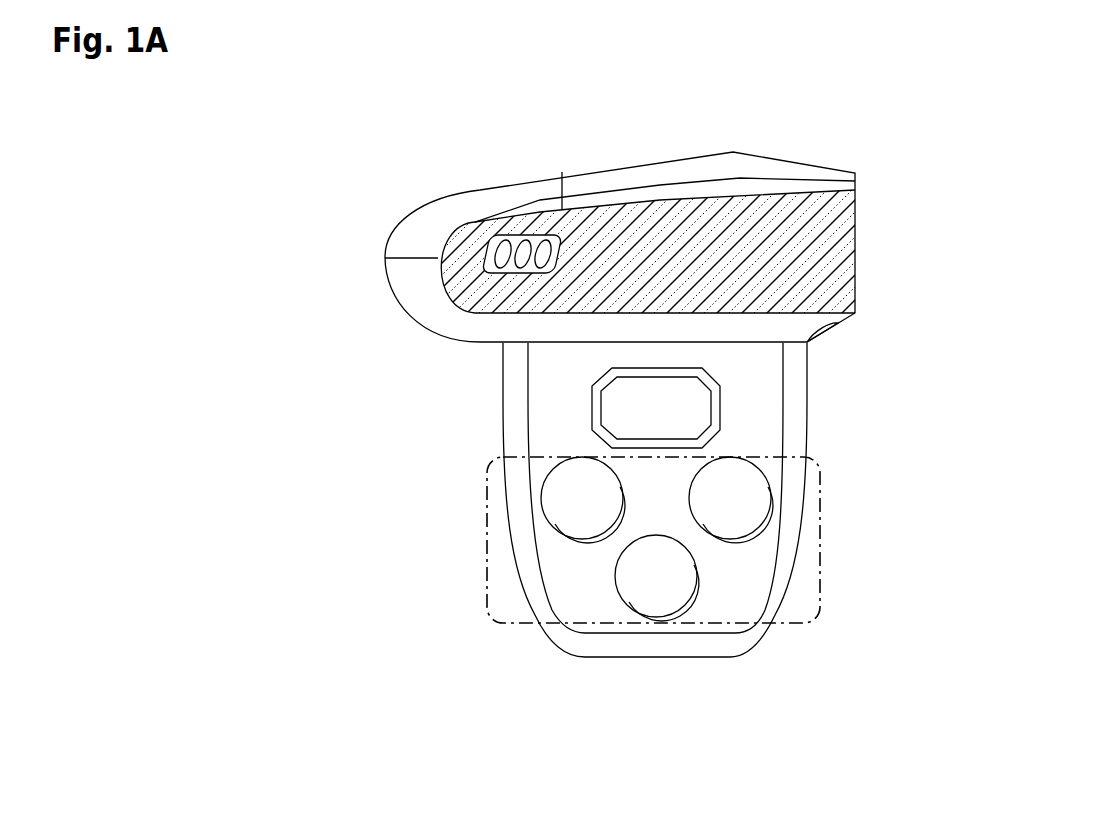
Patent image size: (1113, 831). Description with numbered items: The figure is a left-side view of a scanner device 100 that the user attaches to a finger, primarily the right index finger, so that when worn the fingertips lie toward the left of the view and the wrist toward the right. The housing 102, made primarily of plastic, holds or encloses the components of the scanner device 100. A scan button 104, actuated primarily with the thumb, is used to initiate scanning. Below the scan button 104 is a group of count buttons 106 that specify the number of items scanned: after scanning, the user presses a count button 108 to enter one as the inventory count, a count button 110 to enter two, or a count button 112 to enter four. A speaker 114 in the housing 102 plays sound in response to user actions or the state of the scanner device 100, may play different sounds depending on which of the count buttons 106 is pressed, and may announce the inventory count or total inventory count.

The scanner device 100 is at (823, 124).
The housing 102 is at (665, 158).
The scan button 104 is at (702, 405).
The count buttons 106 is at (820, 487).
The count button 108 is at (572, 520).
The count button 110 is at (648, 600).
The count button 112 is at (720, 520).
The speaker 114 is at (490, 248).